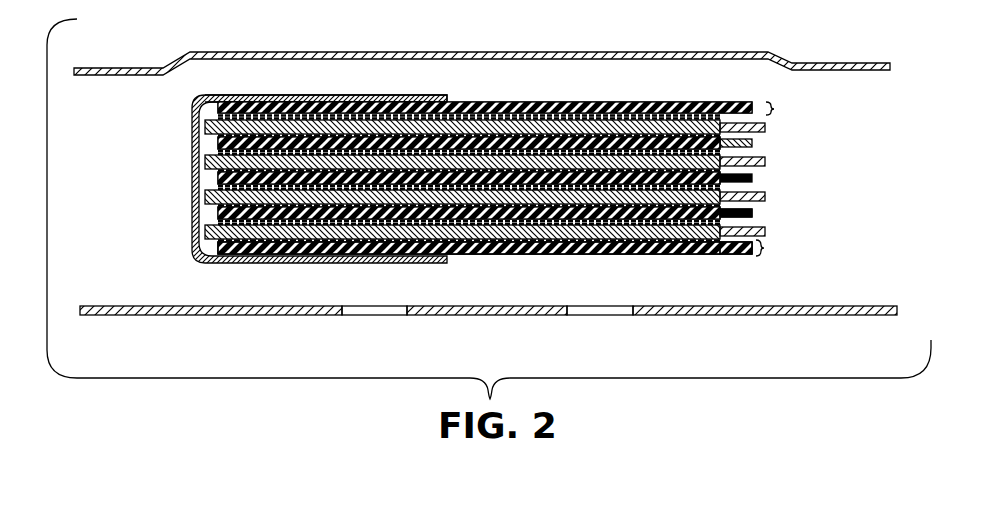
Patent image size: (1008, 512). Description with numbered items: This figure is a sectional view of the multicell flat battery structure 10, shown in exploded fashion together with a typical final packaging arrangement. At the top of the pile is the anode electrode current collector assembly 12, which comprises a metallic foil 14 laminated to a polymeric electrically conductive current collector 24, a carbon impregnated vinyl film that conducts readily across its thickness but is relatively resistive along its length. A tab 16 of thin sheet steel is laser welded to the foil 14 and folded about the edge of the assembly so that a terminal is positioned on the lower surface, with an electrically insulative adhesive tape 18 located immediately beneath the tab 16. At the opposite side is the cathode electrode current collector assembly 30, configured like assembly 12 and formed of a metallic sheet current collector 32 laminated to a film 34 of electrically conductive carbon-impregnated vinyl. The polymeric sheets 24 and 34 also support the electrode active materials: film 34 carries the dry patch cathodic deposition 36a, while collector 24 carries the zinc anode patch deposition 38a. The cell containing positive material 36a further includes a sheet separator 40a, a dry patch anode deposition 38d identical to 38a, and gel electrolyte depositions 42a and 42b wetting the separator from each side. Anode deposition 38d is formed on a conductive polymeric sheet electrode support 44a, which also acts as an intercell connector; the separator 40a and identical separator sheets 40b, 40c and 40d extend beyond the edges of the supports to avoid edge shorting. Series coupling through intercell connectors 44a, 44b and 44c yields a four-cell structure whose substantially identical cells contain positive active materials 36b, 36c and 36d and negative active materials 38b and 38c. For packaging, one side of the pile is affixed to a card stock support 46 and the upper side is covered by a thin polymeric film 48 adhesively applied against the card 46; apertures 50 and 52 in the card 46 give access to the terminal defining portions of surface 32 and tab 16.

The multicell flat battery structure 10 is at (500, 181).
The anode electrode current collector assembly 12 is at (524, 91).
The metallic foil 14 is at (668, 104).
The tab 16 is at (330, 96).
The electrically insulative adhesive tape 18 is at (190, 149).
The polymeric electrically conductive current collector 24 is at (503, 91).
The cathode electrode current collector assembly 30 is at (510, 267).
The metallic sheet current collector 32 is at (702, 256).
The electrically conductive carbon-impregnated vinyl film 34 is at (652, 256).
The cathodic deposition 36a is at (492, 232).
The positive active material 36b is at (548, 197).
The positive active material 36c is at (608, 162).
The positive active material 36d is at (603, 127).
The anode patch-type deposition 38a is at (548, 143).
The negative active material 38b is at (512, 178).
The negative active material 38c is at (470, 213).
The dry patch anode deposition 38d is at (422, 255).
The sheet separator 40a is at (768, 231).
The separator sheet 40b is at (767, 192).
The separator sheet 40c is at (768, 161).
The separator sheet 40d is at (768, 128).
The gel electrolyte deposition 42a is at (756, 246).
The gel electrolyte deposition 42b is at (756, 212).
The conductive polymeric sheet electrode support 44a is at (772, 201).
The intercell connector 44b is at (772, 176).
The intercell connector 44c is at (772, 143).
The card stock support 46 is at (728, 316).
The thin polymeric film 48 is at (668, 52).
The aperture 50 is at (374, 316).
The aperture 52 is at (608, 316).